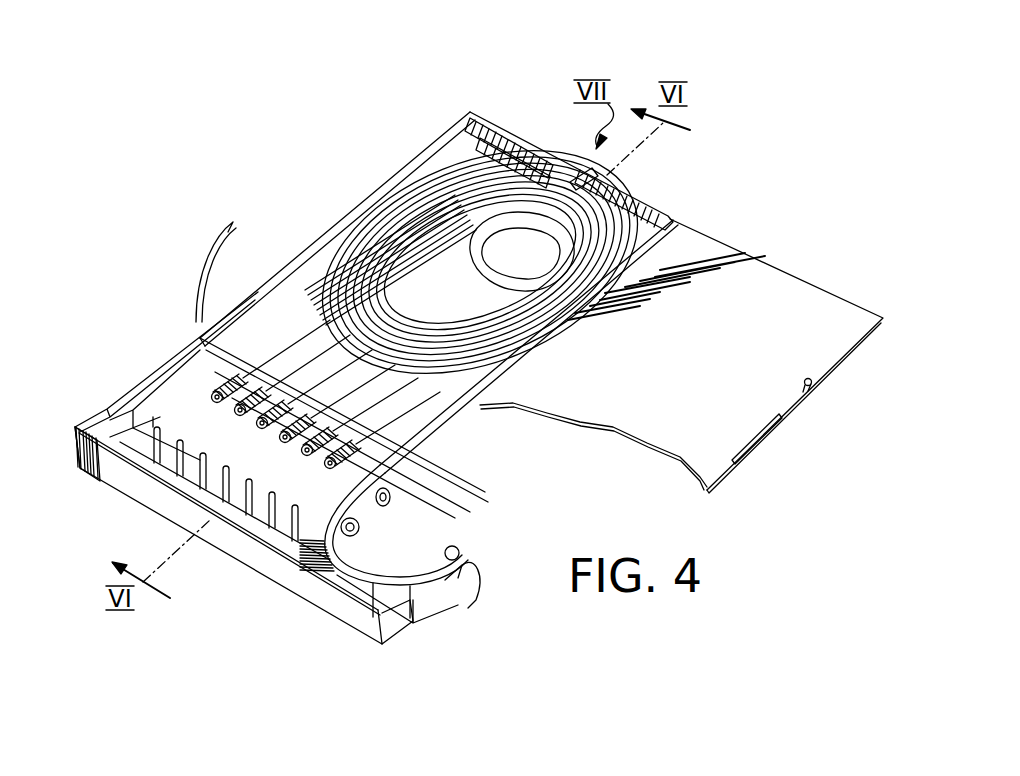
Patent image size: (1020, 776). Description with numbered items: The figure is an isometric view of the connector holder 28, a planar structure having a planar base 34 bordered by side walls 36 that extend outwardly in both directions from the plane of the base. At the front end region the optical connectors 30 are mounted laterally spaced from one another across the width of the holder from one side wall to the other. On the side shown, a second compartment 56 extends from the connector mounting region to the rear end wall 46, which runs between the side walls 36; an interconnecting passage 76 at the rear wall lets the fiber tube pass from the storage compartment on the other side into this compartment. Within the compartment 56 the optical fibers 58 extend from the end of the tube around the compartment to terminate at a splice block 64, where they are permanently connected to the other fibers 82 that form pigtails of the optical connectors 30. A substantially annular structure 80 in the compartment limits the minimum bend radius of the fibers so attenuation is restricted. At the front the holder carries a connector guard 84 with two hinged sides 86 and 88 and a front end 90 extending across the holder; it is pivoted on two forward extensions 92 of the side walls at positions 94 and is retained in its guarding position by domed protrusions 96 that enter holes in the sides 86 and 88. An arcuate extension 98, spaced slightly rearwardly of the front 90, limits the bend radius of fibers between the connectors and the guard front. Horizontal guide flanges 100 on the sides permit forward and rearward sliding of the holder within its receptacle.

The connector holder 28 is at (193, 322).
The optical connectors 30 is at (327, 492).
The planar base 34 is at (270, 290).
The side walls 36 is at (400, 170).
The rear end wall 46 is at (478, 135).
The second compartment 56 is at (440, 432).
The optical fibers 58 is at (497, 177).
The splice block 64 is at (385, 200).
The interconnecting passage 76 is at (587, 170).
The substantially annular structure 80 is at (565, 233).
The other fibers 82 is at (620, 205).
The connector guard 84 is at (170, 515).
The side of guard 86 is at (130, 385).
The side of guard 88 is at (348, 592).
The front end of guard 90 is at (108, 470).
The forward extensions 92 is at (170, 383).
The pivot positions 94 is at (377, 507).
The domed protrusions 96 is at (357, 538).
The arcuate extension 98 is at (447, 562).
The horizontal guide flanges 100 is at (472, 418).